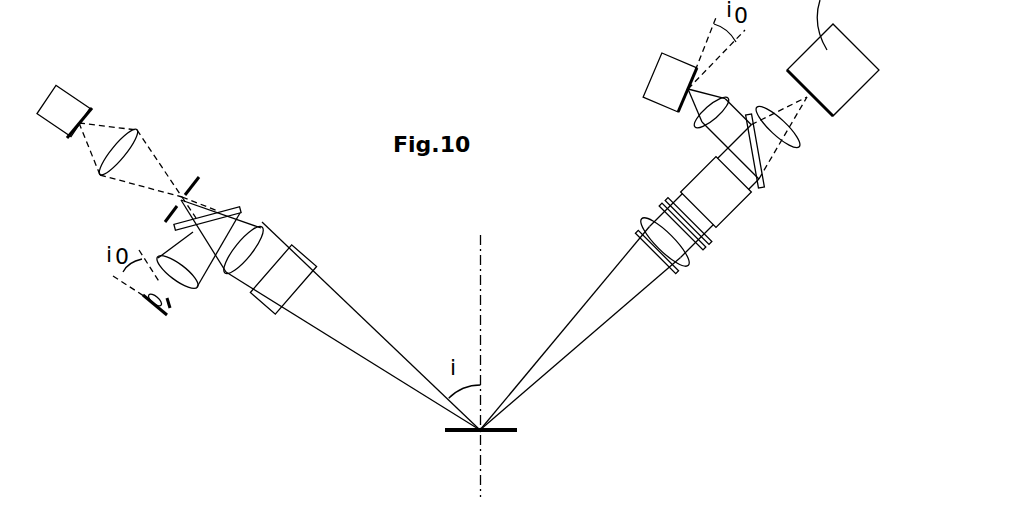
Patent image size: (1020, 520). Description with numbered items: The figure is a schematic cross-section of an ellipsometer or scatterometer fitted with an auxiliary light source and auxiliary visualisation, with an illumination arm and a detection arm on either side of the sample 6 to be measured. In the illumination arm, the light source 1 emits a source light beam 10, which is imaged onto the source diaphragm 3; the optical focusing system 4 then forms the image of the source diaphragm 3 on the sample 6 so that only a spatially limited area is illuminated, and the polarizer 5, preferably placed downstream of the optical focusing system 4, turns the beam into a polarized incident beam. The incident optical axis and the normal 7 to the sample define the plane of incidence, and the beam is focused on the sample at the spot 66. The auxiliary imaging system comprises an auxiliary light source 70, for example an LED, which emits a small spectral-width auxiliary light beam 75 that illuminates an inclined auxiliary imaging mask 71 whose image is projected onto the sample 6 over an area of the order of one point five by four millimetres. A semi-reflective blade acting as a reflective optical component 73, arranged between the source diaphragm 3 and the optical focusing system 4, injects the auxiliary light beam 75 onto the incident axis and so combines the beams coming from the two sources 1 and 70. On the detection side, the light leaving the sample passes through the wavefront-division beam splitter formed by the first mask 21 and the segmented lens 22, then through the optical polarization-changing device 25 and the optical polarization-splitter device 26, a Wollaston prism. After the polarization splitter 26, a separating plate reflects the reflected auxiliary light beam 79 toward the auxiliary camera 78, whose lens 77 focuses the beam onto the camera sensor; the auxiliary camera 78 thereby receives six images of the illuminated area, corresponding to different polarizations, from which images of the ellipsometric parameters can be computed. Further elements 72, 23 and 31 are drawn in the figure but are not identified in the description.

The light source 1 is at (70, 92).
The source light beam 10 is at (133, 120).
The source diaphragm 3 is at (182, 195).
The reflective optical component 73 is at (230, 209).
The optical focusing system 4 is at (263, 222).
The polarizer 5 is at (308, 243).
The reference lens 72 is at (160, 258).
The auxiliary light beam 75 is at (188, 297).
The auxiliary imaging mask 71 is at (172, 312).
The auxiliary light source 70 is at (143, 297).
The normal to the sample 7 is at (480, 263).
The spot of the beam focused on the sample 66 is at (484, 425).
The sample 6 is at (502, 432).
The segmented lens 22 is at (693, 265).
The first mask 21 is at (638, 230).
The compensator plate 23 is at (705, 258).
The optical polarization-changing device 25 is at (665, 203).
The optical polarization-splitter device 26 is at (744, 202).
The reflected auxiliary light beam 79 is at (746, 113).
The lens 77 is at (693, 123).
The auxiliary camera 78 is at (655, 68).
The detector 31 is at (810, 110).